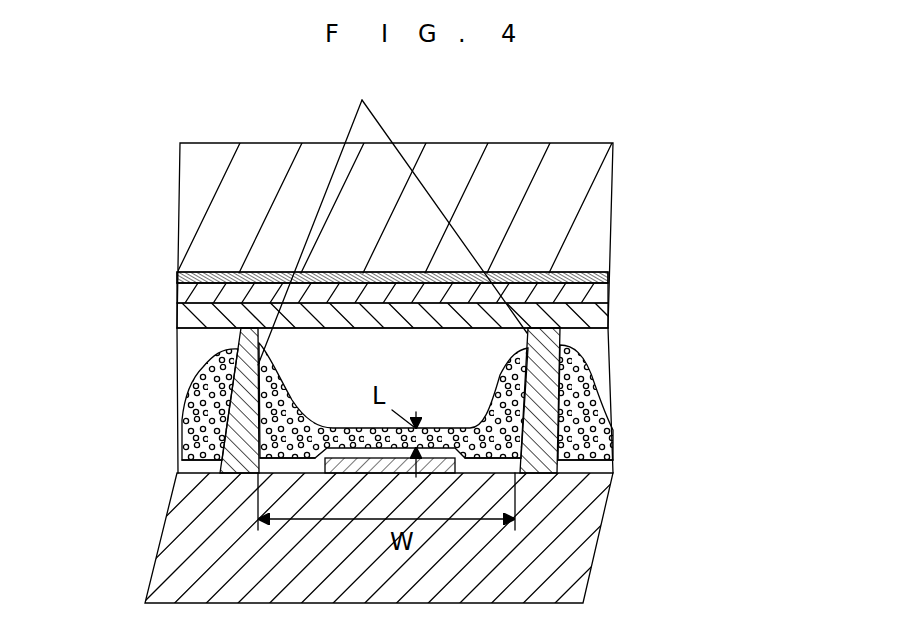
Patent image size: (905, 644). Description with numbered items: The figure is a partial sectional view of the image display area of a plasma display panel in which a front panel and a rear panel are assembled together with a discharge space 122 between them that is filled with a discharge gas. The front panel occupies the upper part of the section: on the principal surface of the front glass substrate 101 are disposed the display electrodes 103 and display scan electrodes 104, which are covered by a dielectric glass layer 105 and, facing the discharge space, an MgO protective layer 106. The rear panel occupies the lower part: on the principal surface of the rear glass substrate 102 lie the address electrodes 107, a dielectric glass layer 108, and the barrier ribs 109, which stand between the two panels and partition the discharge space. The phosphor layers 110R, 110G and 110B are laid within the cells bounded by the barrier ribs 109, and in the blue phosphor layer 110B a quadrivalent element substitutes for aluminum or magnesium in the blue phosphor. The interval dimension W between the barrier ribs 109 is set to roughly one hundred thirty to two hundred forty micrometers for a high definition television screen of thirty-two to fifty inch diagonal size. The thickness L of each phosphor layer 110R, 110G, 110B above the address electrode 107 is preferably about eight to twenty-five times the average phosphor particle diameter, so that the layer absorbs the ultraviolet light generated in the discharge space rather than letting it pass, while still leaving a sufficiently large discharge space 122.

The front glass substrate 101 is at (597, 202).
The rear glass substrate 102 is at (592, 535).
The display electrodes 103 is at (605, 278).
The display scan electrodes 104 is at (392, 277).
The dielectric glass layer 105 is at (608, 297).
The MgO protective layer 106 is at (610, 320).
The address electrodes 107 is at (303, 474).
The dielectric glass layer 108 is at (200, 466).
The barrier ribs 109 is at (392, 214).
The phosphor layer 110R is at (188, 412).
The phosphor layer 110G is at (482, 443).
The phosphor layer 110B is at (603, 435).
The discharge space 122 is at (480, 373).